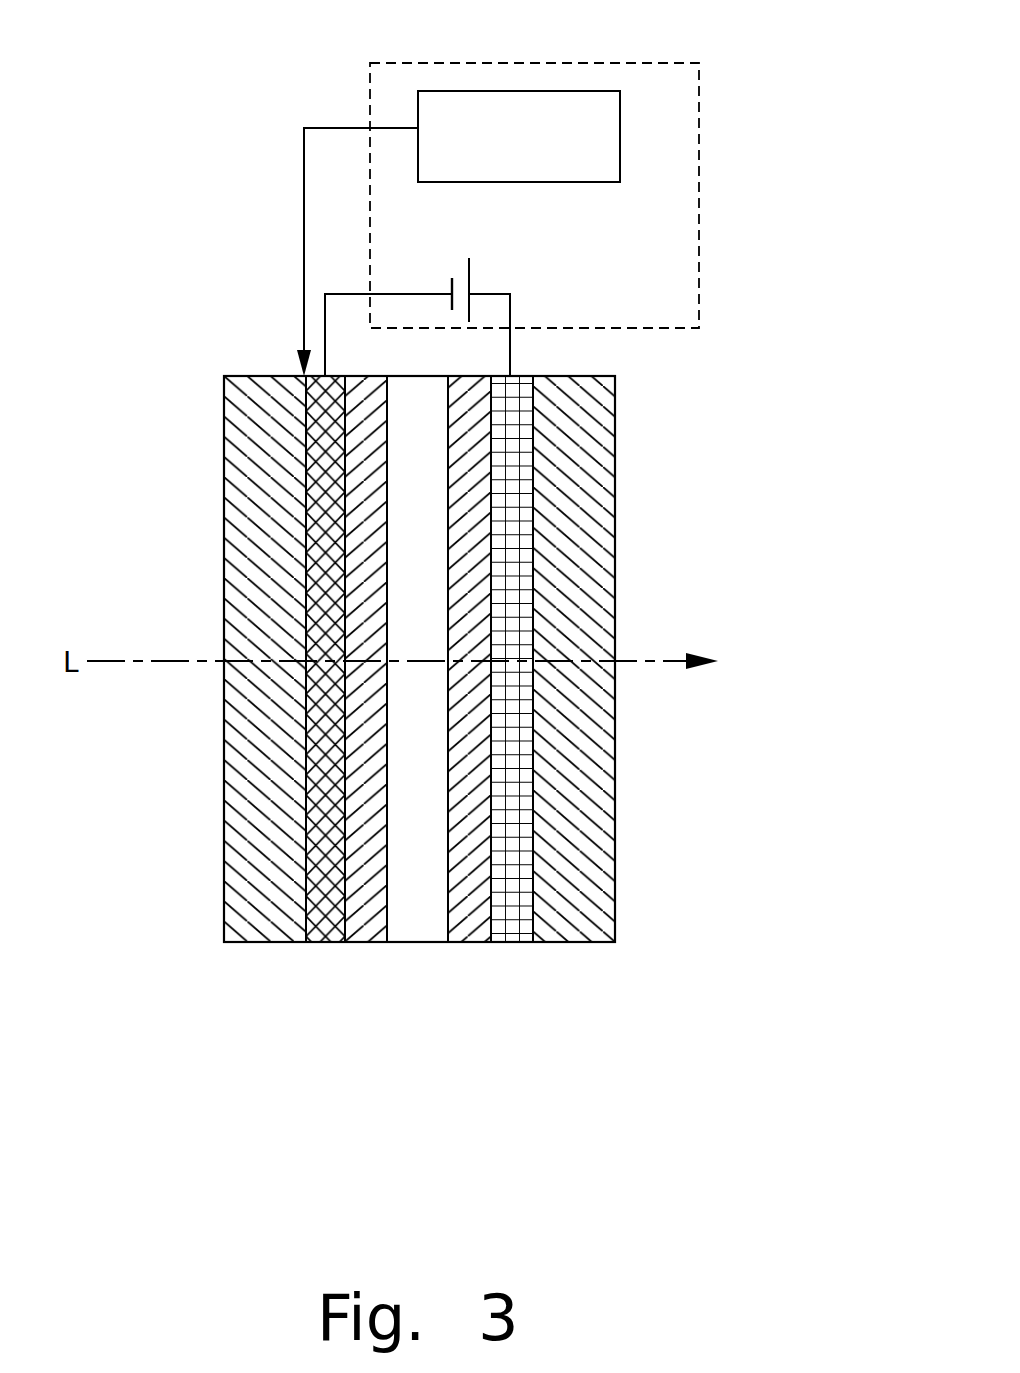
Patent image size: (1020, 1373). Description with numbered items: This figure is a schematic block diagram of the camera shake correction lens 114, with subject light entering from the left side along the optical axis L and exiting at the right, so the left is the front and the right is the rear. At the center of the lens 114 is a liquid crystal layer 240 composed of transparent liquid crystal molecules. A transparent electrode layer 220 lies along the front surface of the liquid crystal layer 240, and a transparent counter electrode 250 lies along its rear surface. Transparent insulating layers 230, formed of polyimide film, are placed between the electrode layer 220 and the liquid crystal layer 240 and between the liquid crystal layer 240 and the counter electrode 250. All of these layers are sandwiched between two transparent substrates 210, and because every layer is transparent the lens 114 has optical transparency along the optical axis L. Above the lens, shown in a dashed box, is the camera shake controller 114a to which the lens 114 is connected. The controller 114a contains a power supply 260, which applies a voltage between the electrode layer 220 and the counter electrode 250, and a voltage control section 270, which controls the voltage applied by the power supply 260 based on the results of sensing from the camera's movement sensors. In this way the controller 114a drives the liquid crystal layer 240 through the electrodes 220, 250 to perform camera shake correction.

The camera shake correction lens 114 is at (668, 400).
The camera shake controller 114a is at (700, 137).
The transparent substrates 210 is at (257, 938).
The transparent electrode layer 220 is at (320, 942).
The transparent insulating layers 230 is at (365, 942).
The liquid crystal layer 240 is at (432, 928).
The counter electrode 250 is at (512, 942).
The power supply 260 is at (498, 293).
The voltage control section 270 is at (548, 91).